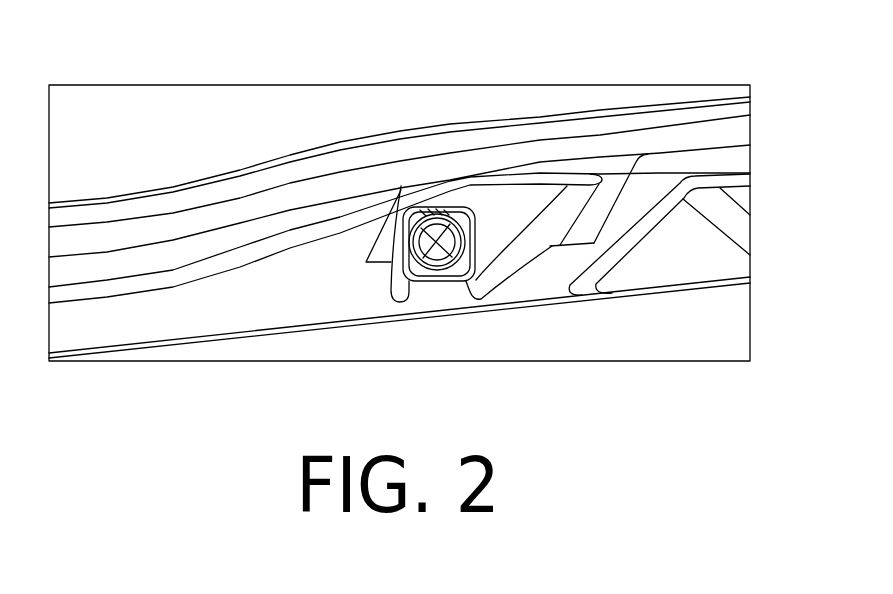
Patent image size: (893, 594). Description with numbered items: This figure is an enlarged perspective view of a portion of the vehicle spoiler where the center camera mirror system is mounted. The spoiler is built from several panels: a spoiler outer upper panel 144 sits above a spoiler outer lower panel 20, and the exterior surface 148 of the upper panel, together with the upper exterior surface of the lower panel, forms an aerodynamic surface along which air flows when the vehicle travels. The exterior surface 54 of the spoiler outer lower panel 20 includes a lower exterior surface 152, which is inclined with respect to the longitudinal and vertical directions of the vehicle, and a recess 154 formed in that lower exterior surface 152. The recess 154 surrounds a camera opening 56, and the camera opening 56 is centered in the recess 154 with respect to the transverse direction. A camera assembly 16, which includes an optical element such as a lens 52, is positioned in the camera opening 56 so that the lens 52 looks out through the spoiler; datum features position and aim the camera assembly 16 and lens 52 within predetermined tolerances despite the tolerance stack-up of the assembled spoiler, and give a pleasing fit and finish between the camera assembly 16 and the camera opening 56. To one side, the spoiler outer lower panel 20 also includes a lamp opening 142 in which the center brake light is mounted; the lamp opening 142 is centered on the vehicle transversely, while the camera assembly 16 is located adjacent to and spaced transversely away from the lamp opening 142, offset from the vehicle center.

The camera assembly 16 is at (448, 253).
The spoiler outer lower panel 20 is at (298, 309).
The lens 52 is at (437, 233).
The camera opening 56 is at (475, 231).
The exterior surface 54 is at (205, 330).
The lamp opening 142 is at (677, 262).
The spoiler outer upper panel 144 is at (236, 103).
The exterior surface 148 is at (399, 230).
The lower exterior surface 152 is at (739, 112).
The recess 154 is at (520, 253).